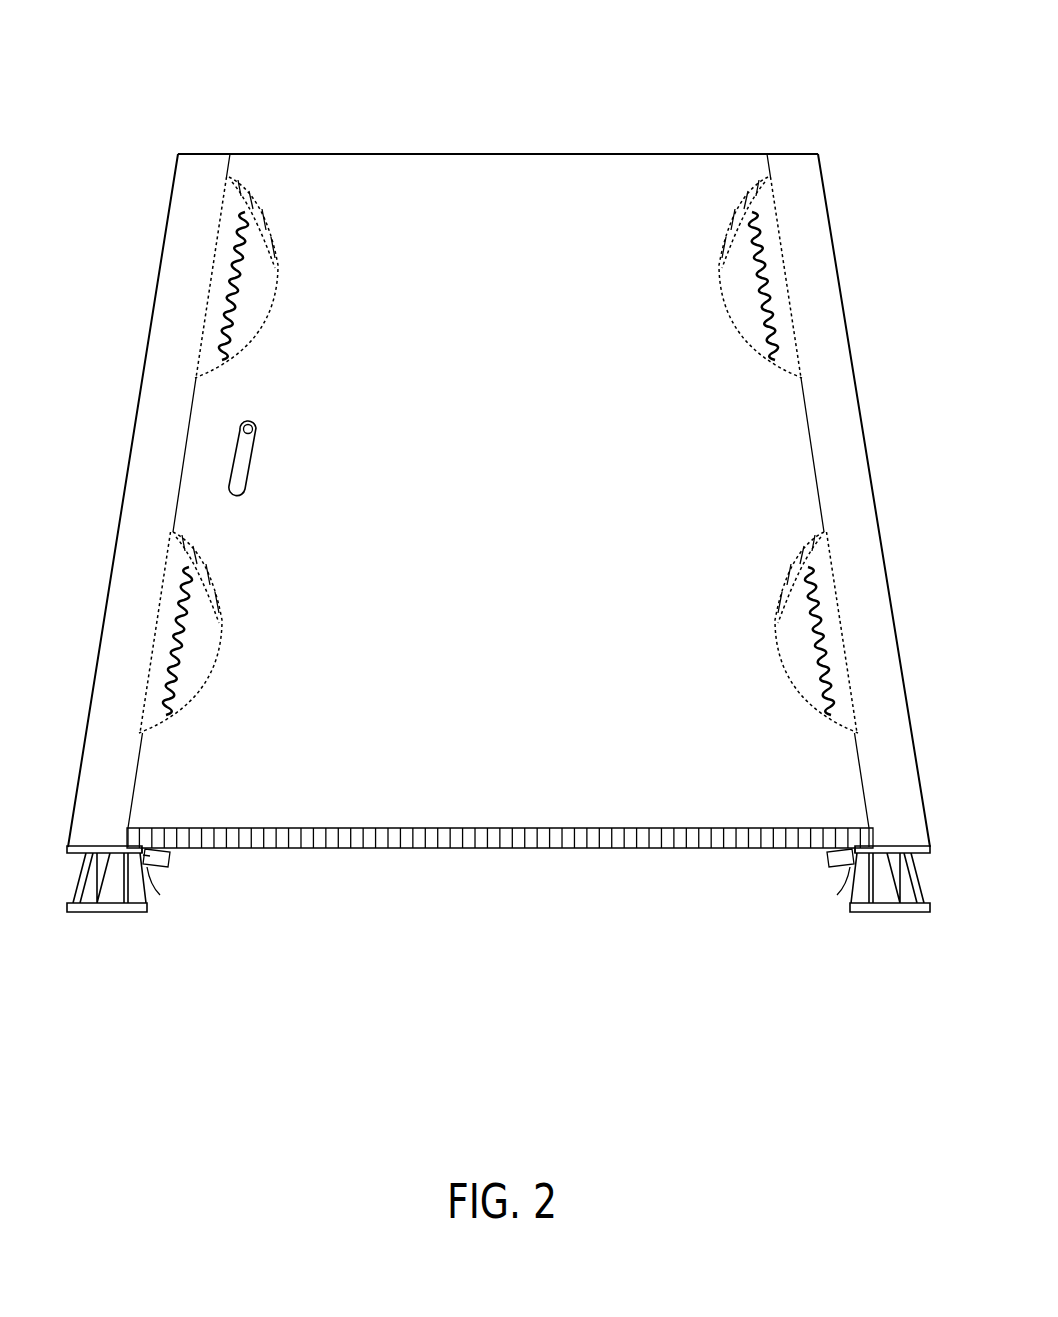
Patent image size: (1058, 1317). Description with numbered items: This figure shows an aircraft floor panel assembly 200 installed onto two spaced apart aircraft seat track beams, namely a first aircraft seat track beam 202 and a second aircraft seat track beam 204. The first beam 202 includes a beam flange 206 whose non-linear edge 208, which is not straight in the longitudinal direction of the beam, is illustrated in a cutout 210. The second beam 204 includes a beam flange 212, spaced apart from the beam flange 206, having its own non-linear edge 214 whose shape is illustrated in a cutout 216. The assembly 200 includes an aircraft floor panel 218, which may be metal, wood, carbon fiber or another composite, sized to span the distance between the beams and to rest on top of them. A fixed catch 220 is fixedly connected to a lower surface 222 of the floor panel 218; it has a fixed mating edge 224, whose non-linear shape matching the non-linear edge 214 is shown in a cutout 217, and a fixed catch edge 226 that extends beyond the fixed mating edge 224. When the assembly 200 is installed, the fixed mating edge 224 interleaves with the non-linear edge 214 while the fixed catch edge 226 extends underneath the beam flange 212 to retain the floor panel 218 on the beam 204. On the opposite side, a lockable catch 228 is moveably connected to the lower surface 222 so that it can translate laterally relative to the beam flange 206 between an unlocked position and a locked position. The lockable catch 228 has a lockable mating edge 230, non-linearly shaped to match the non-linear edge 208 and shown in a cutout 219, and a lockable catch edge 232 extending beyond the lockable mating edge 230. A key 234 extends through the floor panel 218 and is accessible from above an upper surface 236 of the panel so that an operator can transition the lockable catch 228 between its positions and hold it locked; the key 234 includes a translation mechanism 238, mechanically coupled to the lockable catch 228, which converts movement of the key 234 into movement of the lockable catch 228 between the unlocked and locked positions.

The aircraft floor panel assembly 200 is at (758, 68).
The aircraft seat track beam 202 is at (108, 912).
The aircraft seat track beam 204 is at (893, 912).
The beam flange 206 is at (147, 843).
The non-linear edge 208 is at (182, 635).
The cutout 210 is at (222, 600).
The beam flange 212 is at (852, 843).
The non-linear edge 214 is at (815, 636).
The cutout 216 is at (775, 603).
The cutout 217 is at (717, 252).
The aircraft floor panel 218 is at (478, 155).
The cutout 219 is at (277, 252).
The fixed catch 220 is at (833, 868).
The lower surface 222 is at (481, 850).
The fixed mating edge 224 is at (765, 253).
The fixed catch edge 226 is at (855, 862).
The lockable catch 228 is at (147, 868).
The lockable mating edge 230 is at (233, 253).
The lockable catch edge 232 is at (137, 860).
The key 234 is at (254, 443).
The upper surface 236 is at (481, 828).
The translation mechanism 238 is at (170, 864).